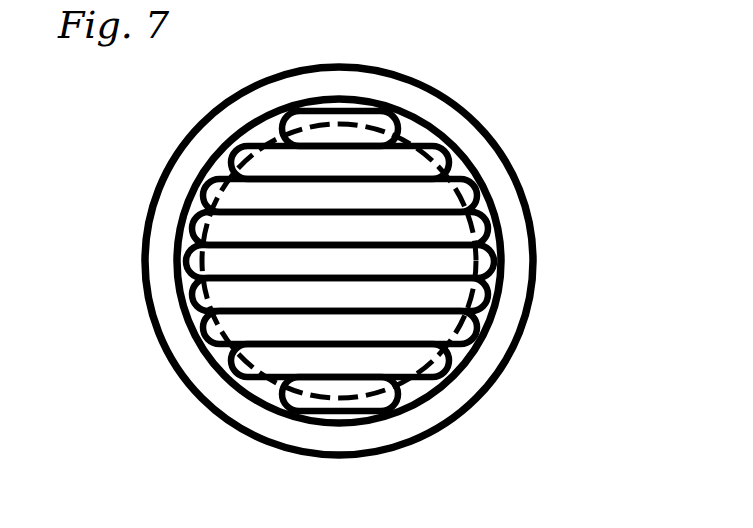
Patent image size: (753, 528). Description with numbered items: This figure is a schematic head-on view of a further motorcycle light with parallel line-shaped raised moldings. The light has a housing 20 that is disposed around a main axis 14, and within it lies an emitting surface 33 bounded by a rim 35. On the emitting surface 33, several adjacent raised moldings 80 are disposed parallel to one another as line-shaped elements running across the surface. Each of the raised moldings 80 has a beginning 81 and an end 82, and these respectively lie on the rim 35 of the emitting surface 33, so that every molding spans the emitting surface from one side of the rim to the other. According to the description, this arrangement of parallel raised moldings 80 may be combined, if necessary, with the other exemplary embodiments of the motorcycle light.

The main axis 14 is at (342, 262).
The housing 20 is at (177, 325).
The emitting surface 33 is at (227, 152).
The rim 35 is at (380, 403).
The raised moldings 80 is at (381, 308).
The beginning 81 is at (398, 308).
The end 82 is at (425, 308).